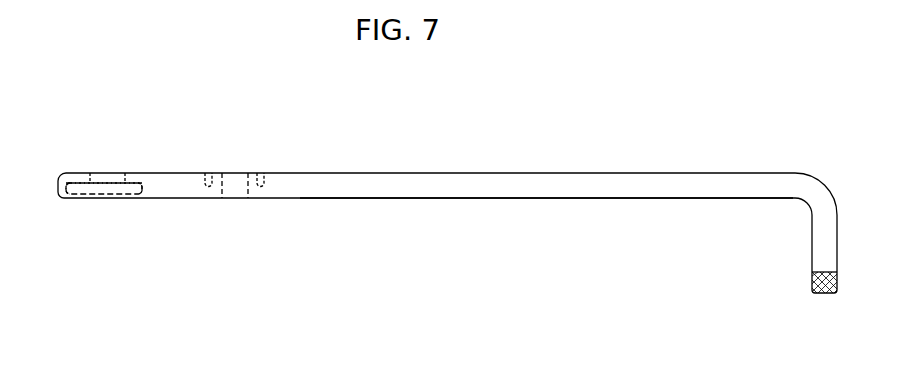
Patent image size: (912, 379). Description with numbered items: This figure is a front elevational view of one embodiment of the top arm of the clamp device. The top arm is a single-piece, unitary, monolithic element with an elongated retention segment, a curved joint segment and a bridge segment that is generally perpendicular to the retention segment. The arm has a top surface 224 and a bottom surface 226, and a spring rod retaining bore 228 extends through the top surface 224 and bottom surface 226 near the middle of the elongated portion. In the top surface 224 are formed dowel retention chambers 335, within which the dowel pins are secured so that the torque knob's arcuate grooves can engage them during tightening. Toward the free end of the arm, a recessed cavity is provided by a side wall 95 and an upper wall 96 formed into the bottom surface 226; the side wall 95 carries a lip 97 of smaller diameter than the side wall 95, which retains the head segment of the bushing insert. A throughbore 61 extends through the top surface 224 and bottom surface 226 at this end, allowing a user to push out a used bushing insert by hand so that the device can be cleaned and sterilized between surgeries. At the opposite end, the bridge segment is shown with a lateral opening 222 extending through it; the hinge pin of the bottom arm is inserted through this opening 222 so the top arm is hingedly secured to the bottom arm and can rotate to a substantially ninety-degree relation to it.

The throughbore 61 is at (106, 181).
The side wall 95 is at (134, 181).
The upper wall 96 is at (67, 190).
The lip 97 is at (139, 197).
The dowel retention chambers 335 is at (209, 171).
The spring rod retaining bore 228 is at (241, 200).
The top surface 224 is at (494, 172).
The bottom surface 226 is at (549, 200).
The lateral opening 222 is at (822, 290).